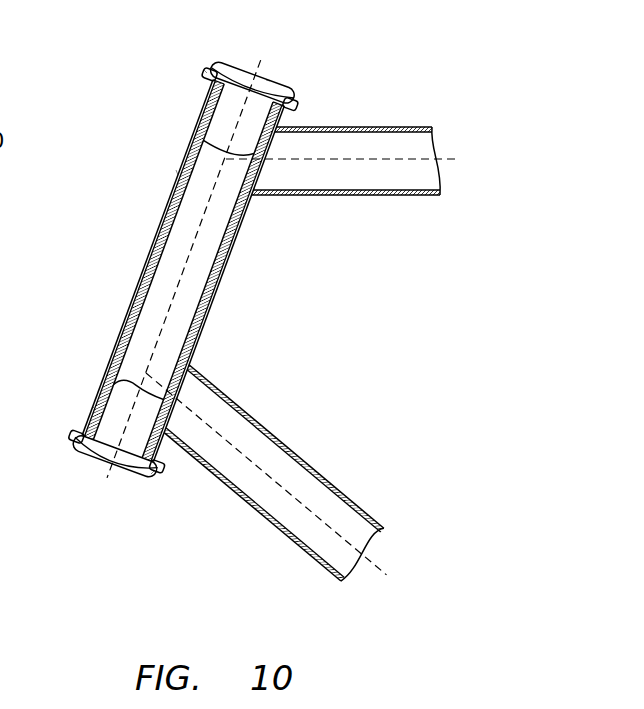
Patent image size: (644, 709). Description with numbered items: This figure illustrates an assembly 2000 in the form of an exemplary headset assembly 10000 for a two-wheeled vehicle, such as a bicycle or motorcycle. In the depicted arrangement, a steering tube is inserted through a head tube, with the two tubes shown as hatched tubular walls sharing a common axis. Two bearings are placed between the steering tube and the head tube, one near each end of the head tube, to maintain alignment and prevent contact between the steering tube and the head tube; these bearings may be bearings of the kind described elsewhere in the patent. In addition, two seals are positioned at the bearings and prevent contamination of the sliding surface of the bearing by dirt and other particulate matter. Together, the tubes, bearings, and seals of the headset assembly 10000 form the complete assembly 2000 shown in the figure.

The assembly 2000 is at (452, 97).
The headset assembly 10000 is at (464, 146).